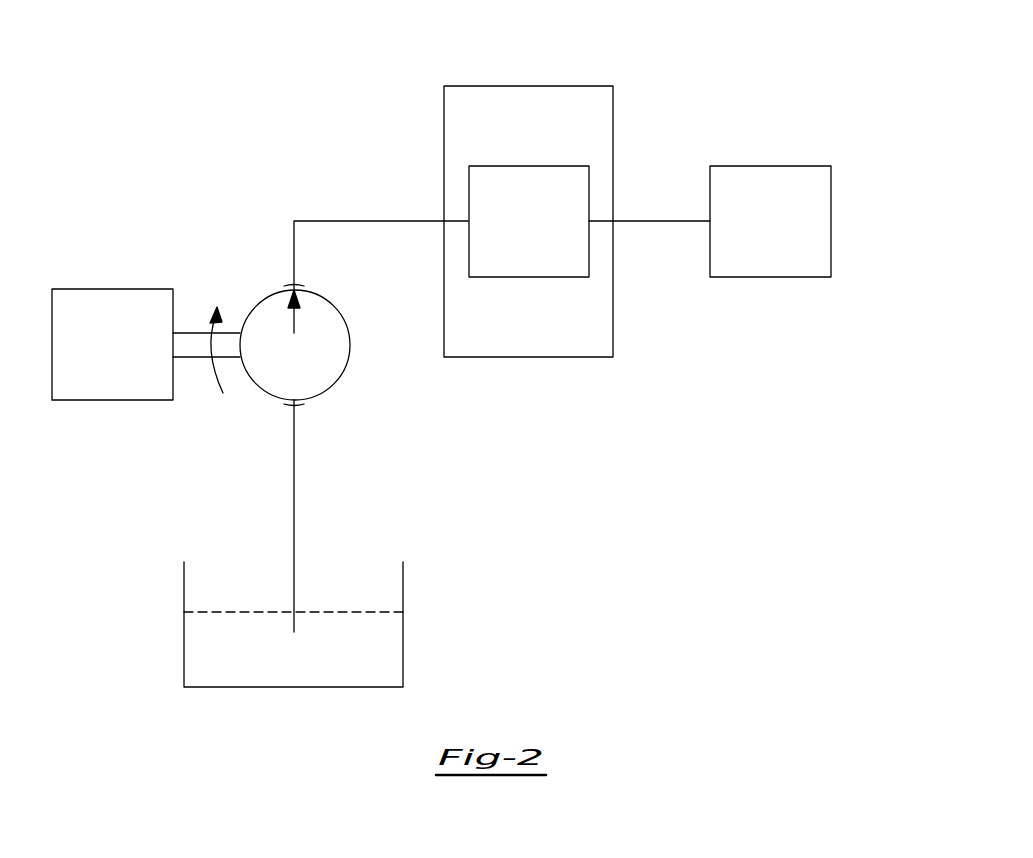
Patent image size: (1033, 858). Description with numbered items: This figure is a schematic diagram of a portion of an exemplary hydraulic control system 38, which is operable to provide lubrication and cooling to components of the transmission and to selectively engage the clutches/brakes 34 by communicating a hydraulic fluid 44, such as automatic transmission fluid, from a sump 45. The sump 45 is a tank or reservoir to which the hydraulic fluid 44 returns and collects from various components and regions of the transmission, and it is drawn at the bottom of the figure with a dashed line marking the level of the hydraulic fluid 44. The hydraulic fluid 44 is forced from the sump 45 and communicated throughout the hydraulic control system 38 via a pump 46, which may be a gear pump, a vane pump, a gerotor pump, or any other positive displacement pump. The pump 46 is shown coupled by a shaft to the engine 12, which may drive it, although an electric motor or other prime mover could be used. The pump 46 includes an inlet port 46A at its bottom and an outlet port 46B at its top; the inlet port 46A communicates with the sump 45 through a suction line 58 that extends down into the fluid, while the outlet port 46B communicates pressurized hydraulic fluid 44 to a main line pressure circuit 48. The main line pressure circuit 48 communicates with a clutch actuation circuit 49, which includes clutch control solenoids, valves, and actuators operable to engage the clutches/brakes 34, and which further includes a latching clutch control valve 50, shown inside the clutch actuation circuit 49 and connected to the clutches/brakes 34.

The hydraulic control system 38 is at (710, 34).
The engine 12 is at (113, 289).
The pump 46 is at (350, 345).
The inlet port 46A is at (294, 401).
The outlet port 46B is at (294, 288).
The main line pressure circuit 48 is at (352, 221).
The clutch actuation circuit 49 is at (580, 86).
The latching clutch control valve 50 is at (541, 236).
The clutches/brakes 34 is at (783, 236).
The suction conduit 58 is at (292, 530).
The hydraulic fluid 44 is at (336, 612).
The sump 45 is at (404, 636).